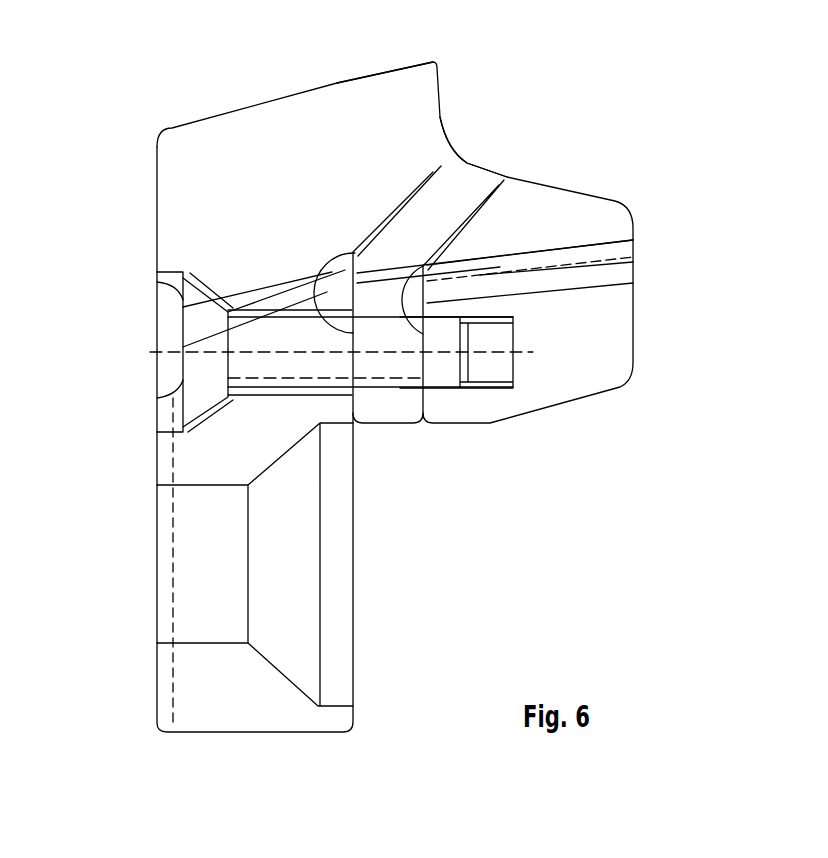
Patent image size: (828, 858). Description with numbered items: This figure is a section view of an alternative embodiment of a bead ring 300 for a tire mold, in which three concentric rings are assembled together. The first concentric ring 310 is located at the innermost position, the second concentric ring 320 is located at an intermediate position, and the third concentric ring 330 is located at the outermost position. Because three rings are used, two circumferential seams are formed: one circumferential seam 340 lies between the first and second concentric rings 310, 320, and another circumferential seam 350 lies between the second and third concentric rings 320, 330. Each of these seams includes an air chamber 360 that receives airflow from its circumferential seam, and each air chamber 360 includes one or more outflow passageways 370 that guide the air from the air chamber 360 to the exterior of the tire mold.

The bead ring 300 is at (150, 123).
The first concentric ring 310 is at (597, 199).
The second concentric ring 320 is at (488, 157).
The third concentric ring 330 is at (441, 87).
The circumferential seam 340 is at (490, 202).
The circumferential seam 350 is at (433, 172).
The air chamber 360 is at (451, 222).
The outflow passageway 370 is at (363, 280).